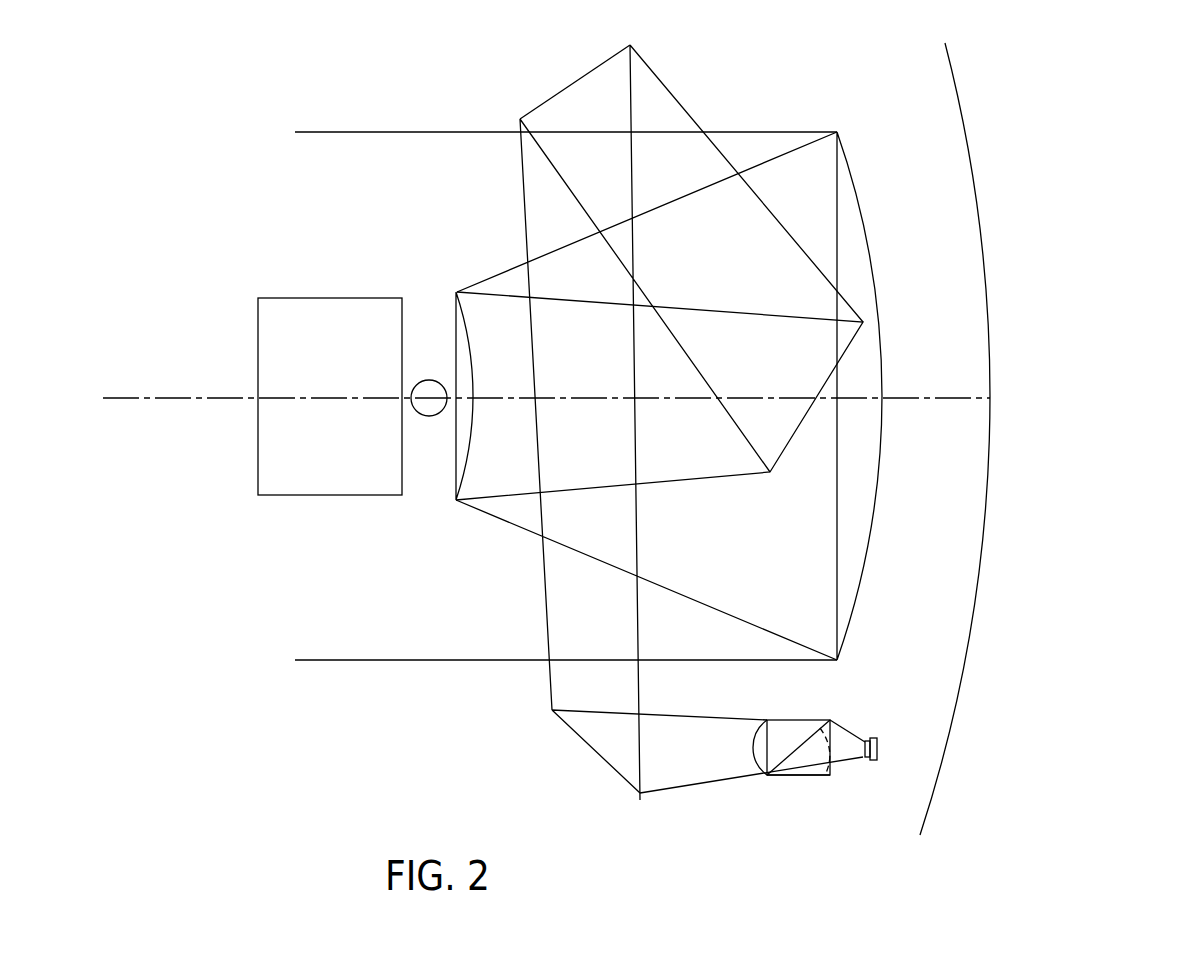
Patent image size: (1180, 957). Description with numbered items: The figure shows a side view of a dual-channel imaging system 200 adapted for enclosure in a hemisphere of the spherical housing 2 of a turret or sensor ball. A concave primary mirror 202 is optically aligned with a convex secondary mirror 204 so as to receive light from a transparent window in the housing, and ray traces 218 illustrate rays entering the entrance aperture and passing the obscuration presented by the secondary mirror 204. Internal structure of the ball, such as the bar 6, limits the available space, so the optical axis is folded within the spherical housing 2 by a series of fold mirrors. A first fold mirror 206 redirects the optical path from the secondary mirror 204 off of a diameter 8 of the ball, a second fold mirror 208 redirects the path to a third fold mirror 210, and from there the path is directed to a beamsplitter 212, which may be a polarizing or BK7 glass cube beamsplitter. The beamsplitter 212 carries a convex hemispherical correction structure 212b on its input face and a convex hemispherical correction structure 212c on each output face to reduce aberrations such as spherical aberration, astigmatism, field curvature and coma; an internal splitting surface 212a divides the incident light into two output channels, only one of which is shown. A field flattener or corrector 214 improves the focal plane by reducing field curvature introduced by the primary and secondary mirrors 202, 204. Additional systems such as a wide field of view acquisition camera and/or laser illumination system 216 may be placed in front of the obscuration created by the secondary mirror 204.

The spherical housing 2 is at (963, 115).
The bar 6 is at (428, 380).
The diameter 8 is at (170, 397).
The dual-channel imaging system 200 is at (1163, 300).
The concave primary mirror 202 is at (877, 245).
The convex secondary mirror 204 is at (454, 499).
The first fold mirror 206 is at (778, 463).
The second fold mirror 208 is at (540, 105).
The third fold mirror 210 is at (605, 767).
The beamsplitter 212 is at (787, 748).
The beam splitter surface 212a is at (777, 750).
The convex hemispherical correction structure 212b is at (755, 757).
The convex hemispherical correction structure 212c is at (832, 768).
The field flattener or corrector 214 is at (882, 743).
The laser illumination system 216 is at (273, 497).
The ray traces 218 is at (342, 132).